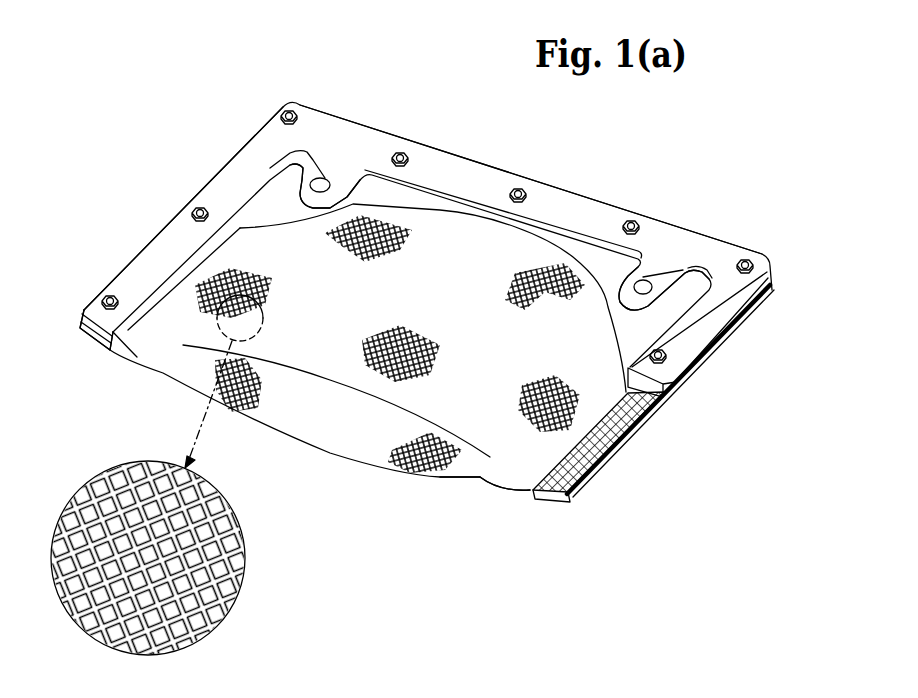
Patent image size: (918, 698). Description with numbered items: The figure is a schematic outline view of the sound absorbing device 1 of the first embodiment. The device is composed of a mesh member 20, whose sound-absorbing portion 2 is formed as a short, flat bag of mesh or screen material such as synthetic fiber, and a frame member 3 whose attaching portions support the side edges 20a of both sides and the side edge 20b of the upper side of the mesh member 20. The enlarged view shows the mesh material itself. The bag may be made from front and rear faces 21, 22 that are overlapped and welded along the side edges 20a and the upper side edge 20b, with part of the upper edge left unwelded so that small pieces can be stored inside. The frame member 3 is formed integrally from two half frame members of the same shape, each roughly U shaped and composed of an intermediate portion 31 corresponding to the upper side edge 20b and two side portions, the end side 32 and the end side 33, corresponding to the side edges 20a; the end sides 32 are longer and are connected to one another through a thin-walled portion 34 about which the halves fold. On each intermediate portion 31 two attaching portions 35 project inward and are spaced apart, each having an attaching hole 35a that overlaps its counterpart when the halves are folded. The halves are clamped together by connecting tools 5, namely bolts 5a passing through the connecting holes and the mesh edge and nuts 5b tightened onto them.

The sound absorbing device 1 is at (221, 148).
The sound-absorbing portion 2 is at (442, 478).
The frame member 3 is at (597, 201).
The connecting tools 5 is at (715, 132).
The bolt 5a is at (637, 221).
The nut 5b is at (641, 236).
The mesh member 20 is at (557, 537).
The side edges 20a is at (597, 470).
The side edge of the upper side 20b is at (553, 226).
The front face 21 is at (506, 448).
The rear face 22 is at (483, 480).
The intermediate portion 31 is at (477, 173).
The end side 32 is at (183, 213).
The end side 33 is at (713, 315).
The thin-walled portion 34 is at (85, 325).
The attaching portion 35 is at (326, 178).
The attaching hole 35a is at (327, 180).